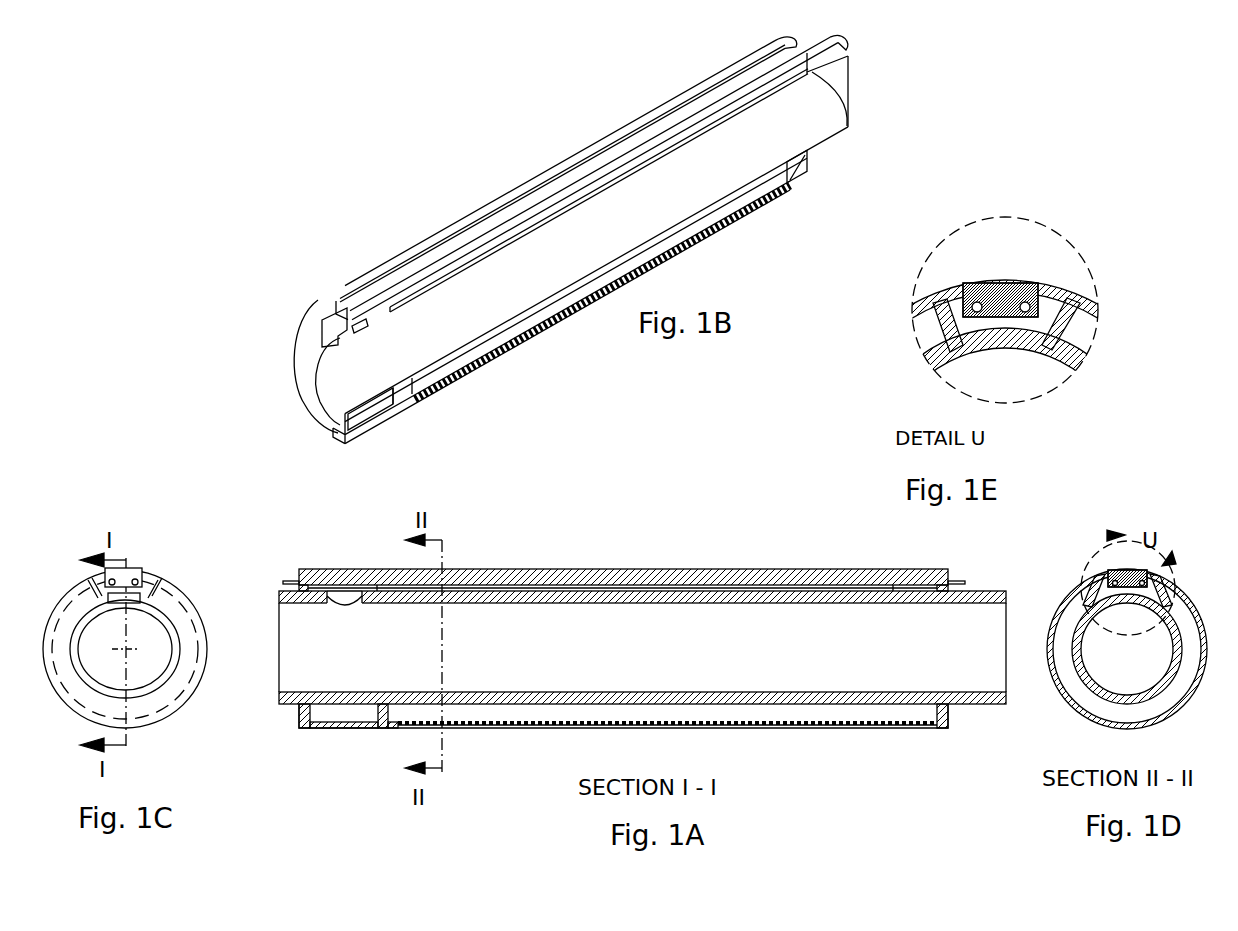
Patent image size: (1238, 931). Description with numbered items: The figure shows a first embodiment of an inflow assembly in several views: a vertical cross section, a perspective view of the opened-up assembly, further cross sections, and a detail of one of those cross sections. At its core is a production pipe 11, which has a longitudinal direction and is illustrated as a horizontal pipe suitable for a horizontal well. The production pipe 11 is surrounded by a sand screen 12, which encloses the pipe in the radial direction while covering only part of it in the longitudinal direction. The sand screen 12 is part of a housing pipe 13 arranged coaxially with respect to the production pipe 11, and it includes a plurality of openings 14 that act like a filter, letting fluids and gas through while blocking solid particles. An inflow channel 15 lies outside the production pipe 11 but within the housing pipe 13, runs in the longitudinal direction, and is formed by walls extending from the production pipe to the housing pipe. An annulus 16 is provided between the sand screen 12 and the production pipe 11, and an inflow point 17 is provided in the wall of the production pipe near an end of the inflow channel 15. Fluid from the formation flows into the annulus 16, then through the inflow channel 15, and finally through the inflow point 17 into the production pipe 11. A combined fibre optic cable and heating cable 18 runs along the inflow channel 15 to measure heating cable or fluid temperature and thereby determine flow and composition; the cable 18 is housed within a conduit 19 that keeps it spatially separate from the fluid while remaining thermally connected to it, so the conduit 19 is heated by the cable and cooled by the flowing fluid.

In FIG. 1B, the production pipe 11 is at (335, 445).
In FIG. 1B, the sand screen 12 is at (540, 330).
In FIG. 1B, the housing pipe 13 is at (398, 418).
In FIG. 1B, the openings 14 is at (462, 374).
In FIG. 1B, the inflow channel 15 is at (392, 268).
In FIG. 1B, the annulus 16 is at (800, 180).
In FIG. 1B, the inflow point 17 is at (380, 330).
In FIG. 1A, the inflow point 17 is at (342, 595).
In FIG. 1C, the inflow point 17 is at (242, 480).
In FIG. 1B, the fibre optic cable and heating cable 18 is at (317, 300).
In FIG. 1D, the conduit 19 is at (1137, 563).
In FIG. 1E, the conduit 19 is at (1012, 293).